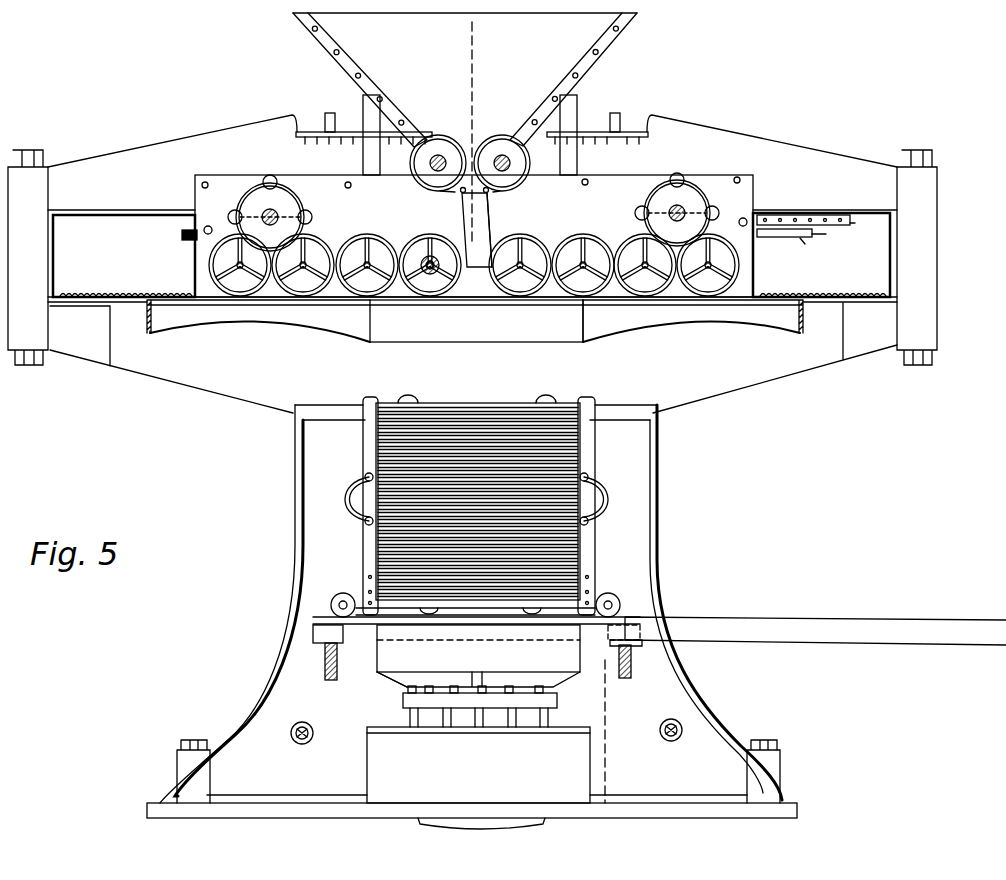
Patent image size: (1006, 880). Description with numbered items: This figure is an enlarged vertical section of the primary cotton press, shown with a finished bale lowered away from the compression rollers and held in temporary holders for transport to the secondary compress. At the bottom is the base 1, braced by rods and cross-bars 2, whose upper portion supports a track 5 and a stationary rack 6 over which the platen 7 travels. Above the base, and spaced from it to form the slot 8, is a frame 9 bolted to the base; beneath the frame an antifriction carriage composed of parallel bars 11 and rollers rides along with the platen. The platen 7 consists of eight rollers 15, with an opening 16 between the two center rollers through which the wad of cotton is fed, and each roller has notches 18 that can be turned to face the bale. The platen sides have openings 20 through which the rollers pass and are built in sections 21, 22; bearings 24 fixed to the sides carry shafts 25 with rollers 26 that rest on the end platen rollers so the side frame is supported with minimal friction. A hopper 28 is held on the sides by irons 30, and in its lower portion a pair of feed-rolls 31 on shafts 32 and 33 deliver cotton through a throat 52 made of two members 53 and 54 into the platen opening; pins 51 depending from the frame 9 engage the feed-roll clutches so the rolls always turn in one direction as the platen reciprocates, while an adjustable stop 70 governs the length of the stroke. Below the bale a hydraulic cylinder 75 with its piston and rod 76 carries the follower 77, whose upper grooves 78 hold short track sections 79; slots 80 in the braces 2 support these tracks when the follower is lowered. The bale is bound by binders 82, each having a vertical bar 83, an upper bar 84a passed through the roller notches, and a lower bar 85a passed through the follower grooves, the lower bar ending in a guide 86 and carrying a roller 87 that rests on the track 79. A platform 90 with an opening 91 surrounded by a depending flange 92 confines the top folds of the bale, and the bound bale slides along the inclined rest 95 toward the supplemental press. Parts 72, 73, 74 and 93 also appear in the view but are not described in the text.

The base 1 is at (472, 611).
The cross-bars 2 is at (325, 667).
The track 5 is at (108, 296).
The rack 6 is at (85, 297).
The platen 7 is at (557, 227).
The slot 8 is at (179, 250).
The frame 9 is at (472, 262).
The parallel bars 11 is at (790, 215).
The rollers 15 is at (322, 252).
The opening 16 is at (475, 246).
The notches 18 is at (306, 296).
The openings 20 is at (544, 205).
The section 21 is at (740, 290).
The section 22 is at (650, 171).
The bearings 24 is at (274, 177).
The shafts 25 is at (265, 208).
The rollers 26 is at (312, 215).
The hopper 28 is at (465, 80).
The irons 30 is at (371, 113).
The feed-rolls 31 is at (430, 184).
The shaft 32 is at (442, 155).
The shaft 33 is at (505, 155).
The pins 51 is at (633, 130).
The throat 52 is at (434, 256).
The member 53 is at (450, 228).
The member 54 is at (484, 212).
The stop 70 is at (866, 230).
The bar 72 is at (828, 236).
The plate 73 is at (805, 240).
The slide bar 74 is at (790, 233).
The cylinder 75 is at (503, 812).
The piston and rod 76 is at (435, 824).
The follower 77 is at (566, 668).
The grooves 78 is at (640, 293).
The track 79 is at (703, 197).
The slots 80 is at (313, 637).
The binders 82 is at (365, 452).
The vertical bar 83 is at (588, 405).
The upper bar 84a is at (410, 401).
The lower bar 85a is at (418, 610).
The guide 86 is at (590, 545).
The roller 87 is at (612, 594).
The platform 90 is at (172, 314).
The opening 91 is at (370, 328).
The depending flange 92 is at (580, 332).
The tray bottom 93 is at (247, 305).
The inclined rest 95 is at (721, 617).